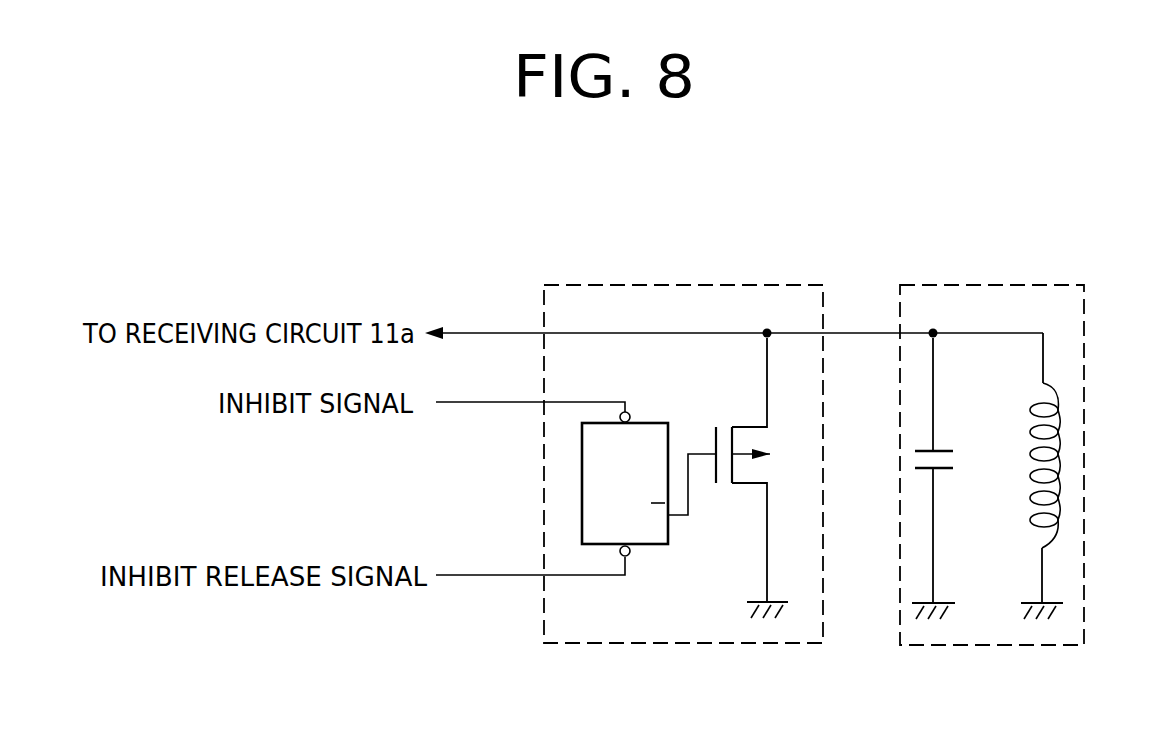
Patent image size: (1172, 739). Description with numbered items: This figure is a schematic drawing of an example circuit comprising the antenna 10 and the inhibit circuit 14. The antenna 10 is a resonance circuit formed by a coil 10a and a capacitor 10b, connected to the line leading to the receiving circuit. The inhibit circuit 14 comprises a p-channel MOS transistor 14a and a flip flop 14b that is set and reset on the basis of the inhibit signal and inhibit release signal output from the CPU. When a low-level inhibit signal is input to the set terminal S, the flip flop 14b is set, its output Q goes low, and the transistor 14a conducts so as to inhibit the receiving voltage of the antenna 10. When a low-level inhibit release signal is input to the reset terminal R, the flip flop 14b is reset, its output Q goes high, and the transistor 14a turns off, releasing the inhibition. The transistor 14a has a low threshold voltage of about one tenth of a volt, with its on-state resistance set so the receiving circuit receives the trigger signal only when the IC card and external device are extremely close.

The inhibit circuit 14 is at (727, 285).
The p-channel MOS transistor 14a is at (770, 432).
The flip flop 14b is at (582, 480).
The antenna 10 is at (977, 285).
The coil 10a is at (1050, 384).
The capacitor 10b is at (925, 470).